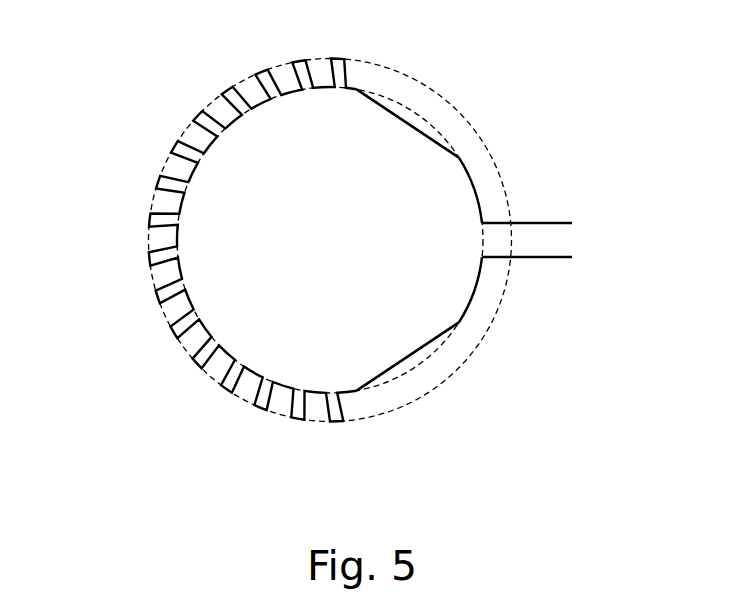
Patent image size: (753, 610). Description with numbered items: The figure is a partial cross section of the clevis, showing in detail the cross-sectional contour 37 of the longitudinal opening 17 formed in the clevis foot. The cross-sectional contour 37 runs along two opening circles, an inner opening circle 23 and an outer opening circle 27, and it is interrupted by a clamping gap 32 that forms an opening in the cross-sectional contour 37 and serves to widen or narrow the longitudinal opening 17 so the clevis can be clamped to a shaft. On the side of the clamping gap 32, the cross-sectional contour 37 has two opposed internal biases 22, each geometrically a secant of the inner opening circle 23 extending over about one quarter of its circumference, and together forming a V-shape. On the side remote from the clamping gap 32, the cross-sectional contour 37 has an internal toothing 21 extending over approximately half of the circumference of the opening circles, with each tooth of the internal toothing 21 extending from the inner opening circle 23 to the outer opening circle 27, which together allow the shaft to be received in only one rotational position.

The longitudinal opening 17 is at (316, 256).
The internal toothing 21 is at (114, 283).
The internal bias 22 is at (410, 122).
The inner opening circle 23 is at (427, 360).
The outer opening circle 27 is at (508, 273).
The clamping gap 32 is at (562, 240).
The cross-sectional contour 37 is at (158, 66).